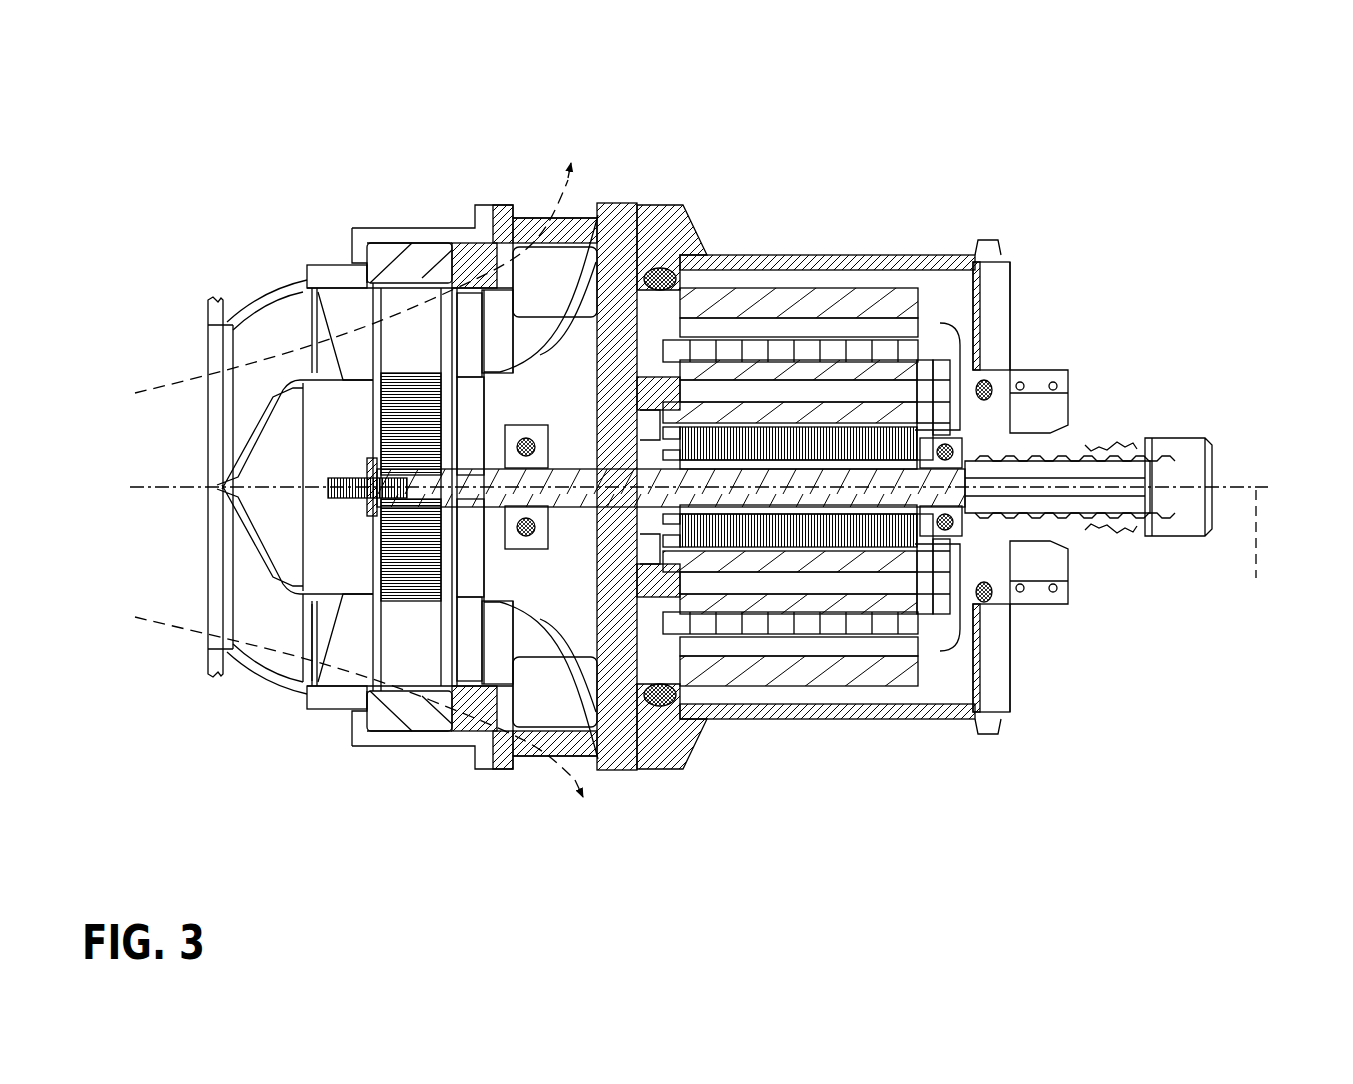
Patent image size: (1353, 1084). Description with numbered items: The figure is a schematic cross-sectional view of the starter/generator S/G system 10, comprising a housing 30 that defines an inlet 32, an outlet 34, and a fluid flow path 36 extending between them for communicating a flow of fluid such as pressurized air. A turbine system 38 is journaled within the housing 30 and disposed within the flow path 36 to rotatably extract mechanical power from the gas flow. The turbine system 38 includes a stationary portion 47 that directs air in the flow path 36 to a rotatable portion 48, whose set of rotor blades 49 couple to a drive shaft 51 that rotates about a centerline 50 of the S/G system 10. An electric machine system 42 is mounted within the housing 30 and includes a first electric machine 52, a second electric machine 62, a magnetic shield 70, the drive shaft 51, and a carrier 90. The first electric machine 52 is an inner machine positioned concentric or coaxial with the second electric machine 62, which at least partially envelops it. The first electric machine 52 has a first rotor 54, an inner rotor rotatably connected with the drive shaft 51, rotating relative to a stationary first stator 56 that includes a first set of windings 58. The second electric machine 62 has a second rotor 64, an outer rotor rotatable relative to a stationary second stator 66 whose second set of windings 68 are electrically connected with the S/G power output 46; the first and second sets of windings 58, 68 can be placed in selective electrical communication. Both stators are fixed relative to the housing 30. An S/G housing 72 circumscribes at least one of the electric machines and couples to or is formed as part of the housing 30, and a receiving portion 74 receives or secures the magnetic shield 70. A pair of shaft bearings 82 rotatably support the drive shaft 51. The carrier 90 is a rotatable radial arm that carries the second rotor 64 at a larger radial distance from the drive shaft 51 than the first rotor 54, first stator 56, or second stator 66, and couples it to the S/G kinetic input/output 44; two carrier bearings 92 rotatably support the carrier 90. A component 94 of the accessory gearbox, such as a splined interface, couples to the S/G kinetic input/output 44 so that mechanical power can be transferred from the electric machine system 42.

The S/G system 10 is at (296, 64).
The housing 30 is at (408, 226).
The inlet 32 is at (200, 366).
The outlet 34 is at (527, 203).
The fluid flow path 36 is at (567, 213).
The turbine system 38 is at (355, 286).
The electric machine system 42 is at (751, 280).
The S/G kinetic input/output 44 is at (1153, 445).
The S/G power output 46 is at (1234, 476).
The stationary portion 47 is at (312, 656).
The rotatable portion 48 is at (440, 600).
The rotor blades 49 is at (400, 605).
The centerline 50 is at (1250, 549).
The drive shaft 51 is at (647, 722).
The first electric machine 52 is at (768, 575).
The first rotor 54 is at (808, 545).
The first stator 56 is at (872, 572).
The first set of windings 58 is at (700, 730).
The second electric machine 62 is at (799, 285).
The second rotor 64 is at (838, 300).
The second stator 66 is at (880, 330).
The second set of windings 68 is at (1072, 380).
The magnetic shield 70 is at (925, 382).
The S/G housing 72 is at (993, 243).
The receiving portion 74 is at (622, 408).
The shaft bearings 82 is at (530, 425).
The carrier 90 is at (967, 312).
The carrier bearings 92 is at (658, 270).
The component of the AGB 94 is at (1150, 548).